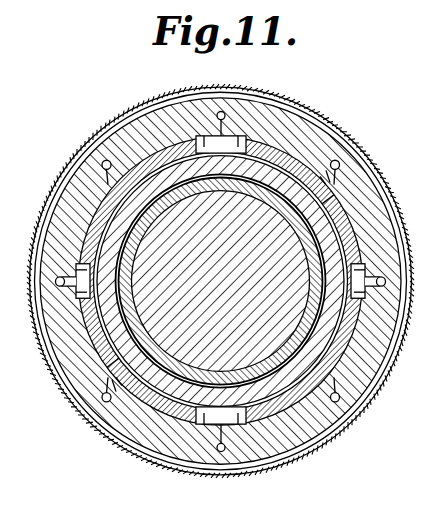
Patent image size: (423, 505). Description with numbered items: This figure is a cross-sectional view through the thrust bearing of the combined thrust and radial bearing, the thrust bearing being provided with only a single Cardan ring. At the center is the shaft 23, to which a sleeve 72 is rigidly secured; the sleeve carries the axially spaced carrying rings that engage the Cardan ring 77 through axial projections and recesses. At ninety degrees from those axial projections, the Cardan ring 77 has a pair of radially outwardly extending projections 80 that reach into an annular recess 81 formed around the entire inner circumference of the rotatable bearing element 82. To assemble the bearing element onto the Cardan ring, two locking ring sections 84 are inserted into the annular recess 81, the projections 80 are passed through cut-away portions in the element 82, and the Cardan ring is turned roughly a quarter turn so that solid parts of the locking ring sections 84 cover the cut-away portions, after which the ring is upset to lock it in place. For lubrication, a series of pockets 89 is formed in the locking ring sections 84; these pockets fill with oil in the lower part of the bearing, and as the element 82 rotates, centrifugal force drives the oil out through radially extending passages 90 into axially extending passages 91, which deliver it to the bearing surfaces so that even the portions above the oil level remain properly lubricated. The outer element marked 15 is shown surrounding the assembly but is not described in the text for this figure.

The outer shell ring 15 is at (225, 281).
The shaft 23 is at (221, 281).
The sleeve 72 is at (303, 230).
The Cardan ring 77 is at (314, 176).
The radially outwardly extending projections 80 is at (227, 139).
The annular recess 81 is at (342, 205).
The rotatable bearing element 82 is at (160, 437).
The locking ring sections 84 is at (351, 228).
The pockets 89 is at (337, 162).
The radially extending passages 90 is at (326, 178).
The axially extending passages 91 is at (328, 172).